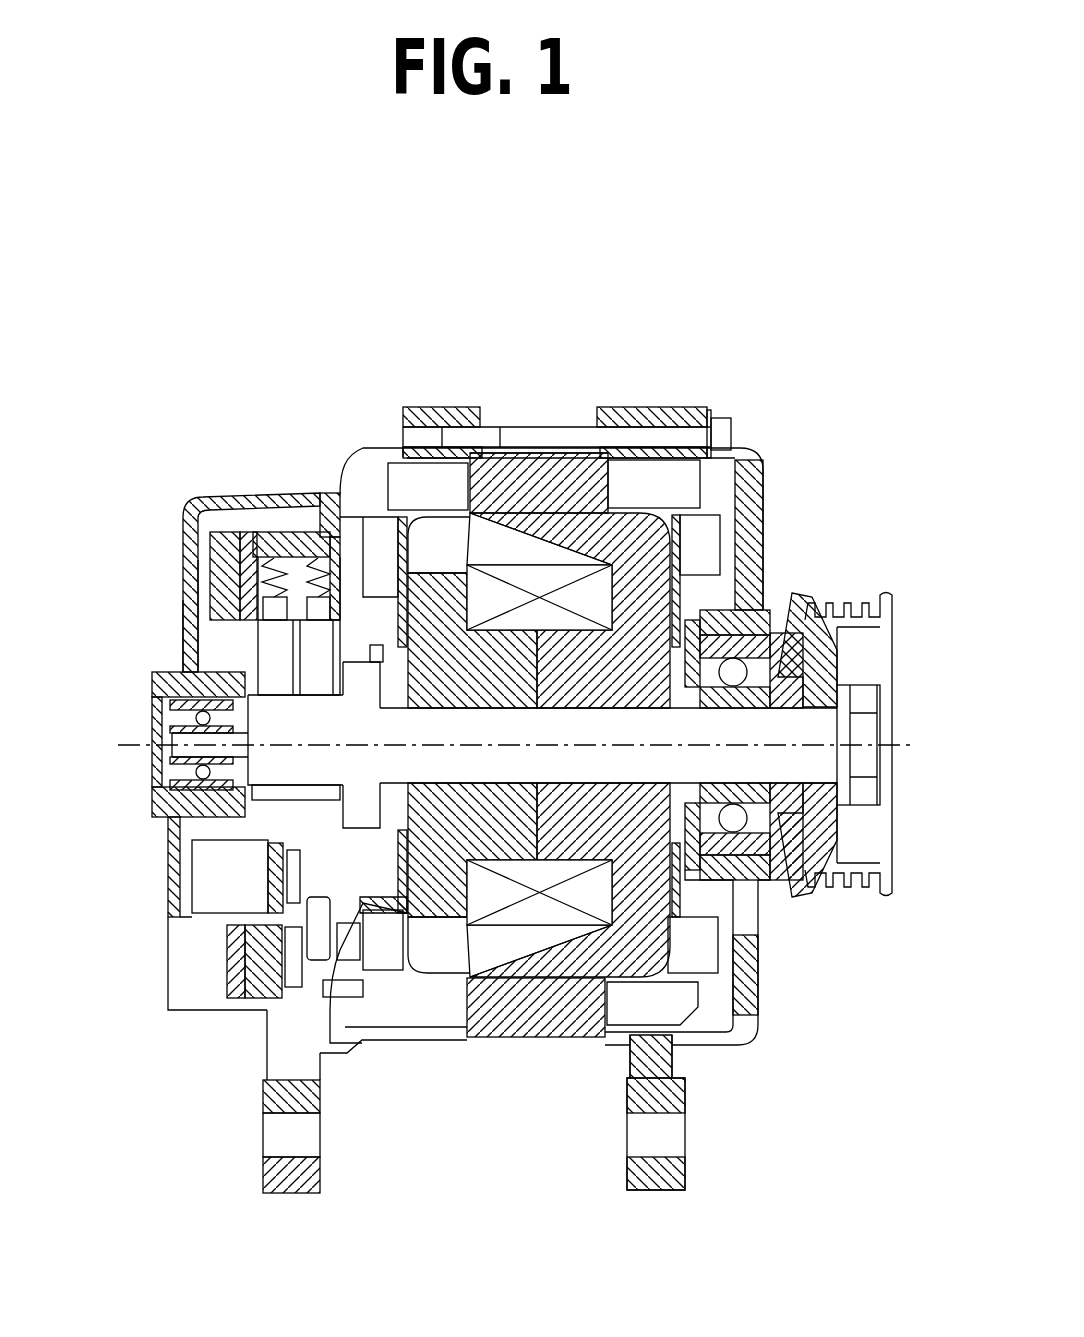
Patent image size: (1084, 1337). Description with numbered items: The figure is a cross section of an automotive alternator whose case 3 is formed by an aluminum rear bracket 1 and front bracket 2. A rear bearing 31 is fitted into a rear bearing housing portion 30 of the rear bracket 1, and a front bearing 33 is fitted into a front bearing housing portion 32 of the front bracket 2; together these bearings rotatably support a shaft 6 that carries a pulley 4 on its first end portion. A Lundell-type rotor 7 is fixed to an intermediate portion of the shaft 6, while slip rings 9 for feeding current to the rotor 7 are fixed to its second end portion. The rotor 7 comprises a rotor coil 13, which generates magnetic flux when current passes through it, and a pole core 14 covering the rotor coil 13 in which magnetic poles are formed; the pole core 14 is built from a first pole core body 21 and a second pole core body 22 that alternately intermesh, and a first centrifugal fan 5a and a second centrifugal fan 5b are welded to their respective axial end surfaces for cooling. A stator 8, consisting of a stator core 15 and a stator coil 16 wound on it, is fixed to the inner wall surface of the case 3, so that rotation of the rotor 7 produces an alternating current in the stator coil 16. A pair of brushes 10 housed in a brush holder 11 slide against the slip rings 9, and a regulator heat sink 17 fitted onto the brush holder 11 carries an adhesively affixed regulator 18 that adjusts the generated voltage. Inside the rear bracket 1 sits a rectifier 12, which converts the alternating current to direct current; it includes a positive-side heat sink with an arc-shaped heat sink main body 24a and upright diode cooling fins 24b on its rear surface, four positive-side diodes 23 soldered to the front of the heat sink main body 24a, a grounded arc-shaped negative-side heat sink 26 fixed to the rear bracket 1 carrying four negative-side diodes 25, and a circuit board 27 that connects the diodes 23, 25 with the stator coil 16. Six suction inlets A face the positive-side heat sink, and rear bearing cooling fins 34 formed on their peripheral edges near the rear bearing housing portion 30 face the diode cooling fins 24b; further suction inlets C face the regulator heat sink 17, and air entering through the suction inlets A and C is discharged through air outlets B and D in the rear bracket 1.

The rear bracket 1 is at (287, 540).
The front bracket 2 is at (763, 513).
The case 3 is at (750, 978).
The pulley 4 is at (882, 595).
The first centrifugal fan 5a is at (378, 533).
The second centrifugal fan 5b is at (705, 500).
The shaft 6 is at (835, 670).
The rotor 7 is at (715, 462).
The stator 8 is at (563, 467).
The slip rings 9 is at (312, 550).
The brushes 10 is at (250, 575).
The brush holder 11 is at (312, 500).
The rectifier 12 is at (235, 930).
The rotor coil 13 is at (577, 895).
The pole core 14 is at (637, 635).
The stator core 15 is at (527, 475).
The stator coil 16 is at (680, 478).
The regulator heat sink 17 is at (185, 565).
The regulator 18 is at (223, 572).
The first pole core body 21 is at (490, 457).
The second pole core body 22 is at (646, 538).
The positive-side diodes 23 is at (242, 950).
The heat sink main body 24a is at (200, 862).
The diode cooling fins 24b is at (195, 905).
The negative-side diodes 25 is at (297, 985).
The negative-side heat sink 26 is at (260, 982).
The circuit board 27 is at (347, 982).
The rear bearing housing portion 30 is at (195, 632).
The rear bearing 31 is at (150, 691).
The front bearing housing portion 32 is at (772, 610).
The front bearing 33 is at (760, 883).
The rear bearing cooling fins 34 is at (167, 839).
The suction inlets A is at (197, 885).
The air outlet B is at (410, 1042).
The suction inlets C is at (191, 565).
The air outlet D is at (347, 470).